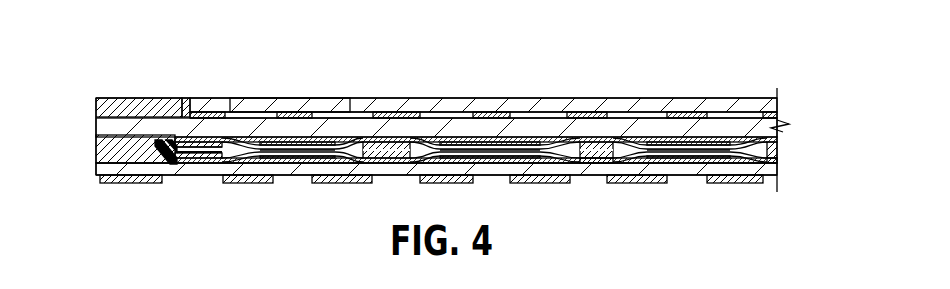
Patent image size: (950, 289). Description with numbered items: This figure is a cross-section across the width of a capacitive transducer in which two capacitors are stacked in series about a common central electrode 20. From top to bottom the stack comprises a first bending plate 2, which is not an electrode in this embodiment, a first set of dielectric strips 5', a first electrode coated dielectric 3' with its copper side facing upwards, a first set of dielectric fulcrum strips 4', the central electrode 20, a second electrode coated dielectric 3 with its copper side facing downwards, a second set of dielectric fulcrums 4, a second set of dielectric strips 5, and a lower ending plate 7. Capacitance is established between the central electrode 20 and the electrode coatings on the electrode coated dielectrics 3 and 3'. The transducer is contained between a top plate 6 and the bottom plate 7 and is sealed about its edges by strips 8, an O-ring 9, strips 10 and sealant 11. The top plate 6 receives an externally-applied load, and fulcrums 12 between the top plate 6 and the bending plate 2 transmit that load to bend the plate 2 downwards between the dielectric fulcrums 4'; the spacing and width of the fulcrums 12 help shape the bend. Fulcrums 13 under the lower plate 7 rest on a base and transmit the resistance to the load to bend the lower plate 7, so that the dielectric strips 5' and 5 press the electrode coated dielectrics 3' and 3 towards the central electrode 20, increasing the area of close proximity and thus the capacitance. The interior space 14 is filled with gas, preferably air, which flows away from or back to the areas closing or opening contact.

The first bending plate 2 is at (393, 100).
The second electrode coated dielectric 3 is at (304, 205).
The first electrode coated dielectric 3' is at (476, 83).
The second set of dielectric fulcrums 4 is at (537, 200).
The first set of dielectric fulcrum strips 4' is at (613, 104).
The second set of dielectric strips 5 is at (699, 198).
The first set of dielectric strips 5' is at (740, 106).
The top plate 6 is at (273, 100).
The lower ending plate 7 is at (288, 175).
The strips 8 is at (121, 100).
The O-ring 9 is at (160, 140).
The strips 10 is at (96, 145).
The sealant 11 is at (186, 99).
The fulcrums 12 is at (548, 113).
The fulcrums 13 is at (122, 183).
The interior space 14 is at (637, 137).
The central electrode 20 is at (232, 155).